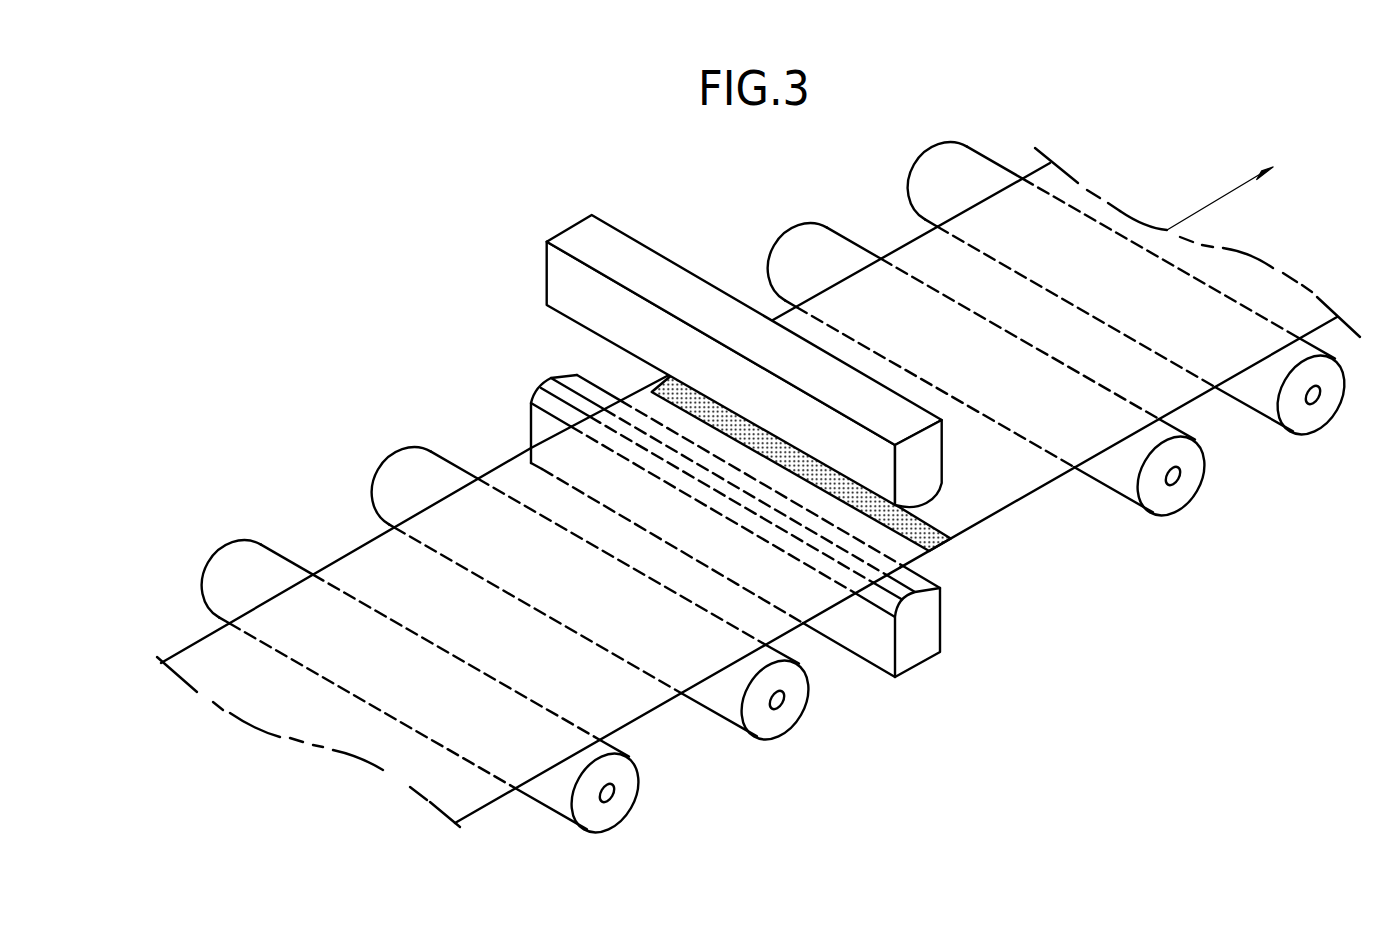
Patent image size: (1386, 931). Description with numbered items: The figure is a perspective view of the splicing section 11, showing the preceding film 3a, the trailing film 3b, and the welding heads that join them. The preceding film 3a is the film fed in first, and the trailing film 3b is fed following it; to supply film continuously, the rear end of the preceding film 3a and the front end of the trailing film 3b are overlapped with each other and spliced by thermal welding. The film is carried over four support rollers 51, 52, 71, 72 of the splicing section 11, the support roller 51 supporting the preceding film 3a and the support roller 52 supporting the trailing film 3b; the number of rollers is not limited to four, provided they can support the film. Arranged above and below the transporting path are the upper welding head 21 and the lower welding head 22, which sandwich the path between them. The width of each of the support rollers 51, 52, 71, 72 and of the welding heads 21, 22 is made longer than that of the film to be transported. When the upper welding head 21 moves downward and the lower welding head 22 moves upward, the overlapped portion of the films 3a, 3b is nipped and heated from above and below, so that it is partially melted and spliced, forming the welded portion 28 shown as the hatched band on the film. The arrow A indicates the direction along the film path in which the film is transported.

The splicing section 11 is at (372, 323).
The upper welding head 21 is at (588, 218).
The lower welding head 22 is at (923, 650).
The welded portion 28 is at (650, 390).
The preceding film 3a is at (1058, 181).
The trailing film 3b is at (209, 687).
The support roller 51 is at (1182, 490).
The support roller 52 is at (793, 700).
The support roller 71 is at (1312, 412).
The support roller 72 is at (617, 800).
The web transport direction A is at (1247, 184).